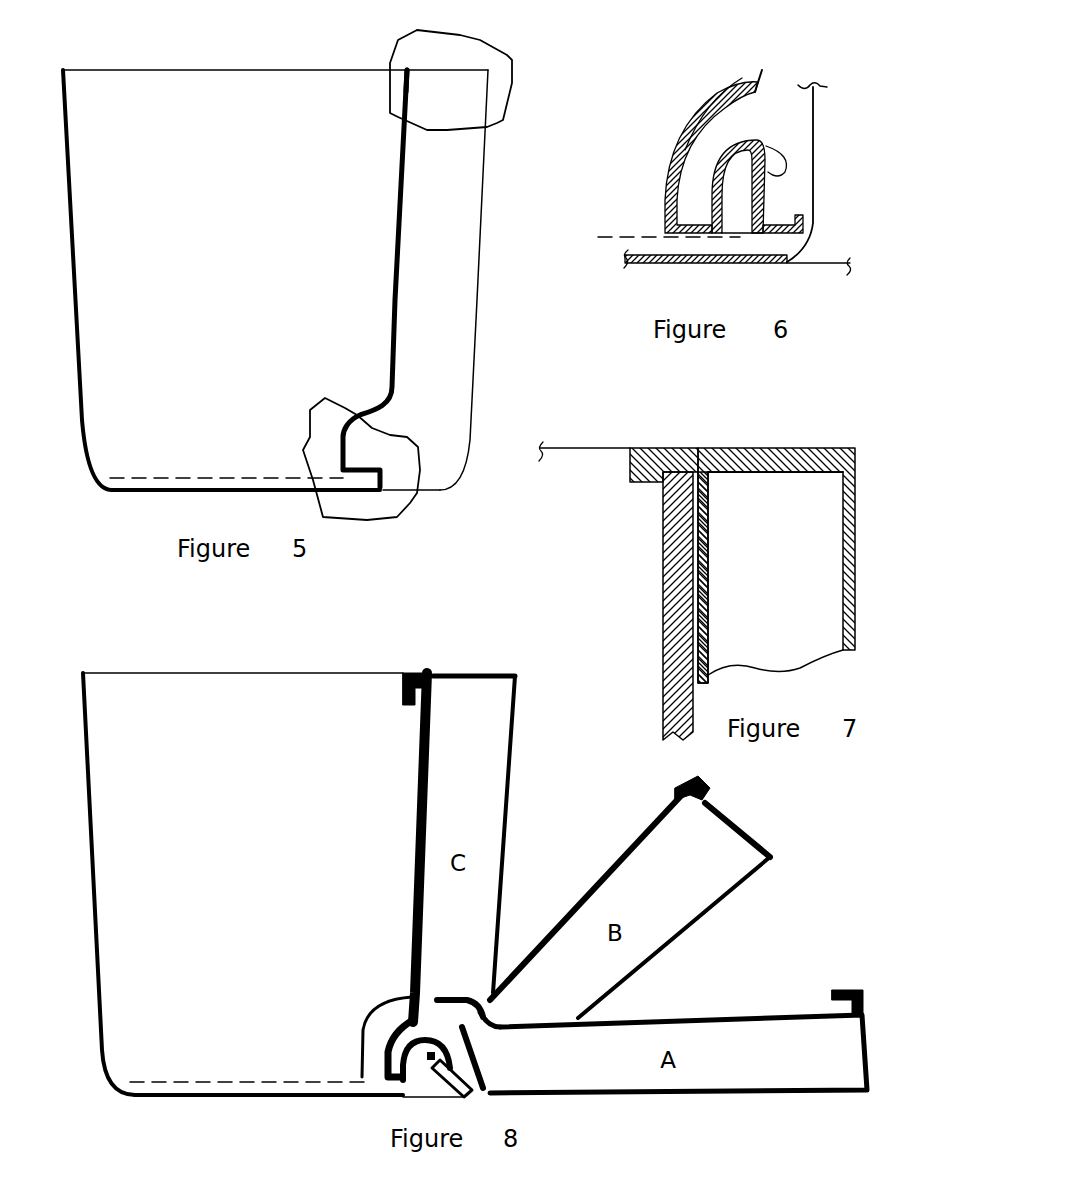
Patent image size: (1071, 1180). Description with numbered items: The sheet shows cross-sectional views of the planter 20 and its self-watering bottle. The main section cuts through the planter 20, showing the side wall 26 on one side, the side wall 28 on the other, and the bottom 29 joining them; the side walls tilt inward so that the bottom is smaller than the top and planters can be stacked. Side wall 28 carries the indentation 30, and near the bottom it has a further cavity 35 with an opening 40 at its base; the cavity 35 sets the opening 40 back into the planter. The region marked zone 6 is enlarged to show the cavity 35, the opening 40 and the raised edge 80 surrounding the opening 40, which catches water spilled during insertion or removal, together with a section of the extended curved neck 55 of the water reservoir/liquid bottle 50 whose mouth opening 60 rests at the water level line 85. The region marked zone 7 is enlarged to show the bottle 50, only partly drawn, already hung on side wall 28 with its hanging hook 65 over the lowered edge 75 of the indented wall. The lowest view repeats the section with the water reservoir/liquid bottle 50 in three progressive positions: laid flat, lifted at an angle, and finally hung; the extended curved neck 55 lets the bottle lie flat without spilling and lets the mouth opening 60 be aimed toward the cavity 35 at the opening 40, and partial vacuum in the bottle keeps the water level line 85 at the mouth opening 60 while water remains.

In FIG. 5, the zone 6 is at (403, 513).
In FIG. 5, the zone 7 is at (465, 37).
In FIG. 5, the planter 20 is at (498, 270).
In FIG. 5, the side wall 26 is at (75, 377).
In FIG. 5, the side wall 28 is at (477, 330).
In FIG. 7, the side wall 28 is at (663, 533).
In FIG. 5, the bottom 29 is at (163, 493).
In FIG. 6, the bottom 29 is at (660, 263).
In FIG. 5, the indentation 30 is at (453, 212).
In FIG. 5, the cavity 35 is at (375, 415).
In FIG. 6, the cavity 35 is at (730, 128).
In FIG. 6, the opening 40 is at (760, 235).
In FIG. 8, the opening 40 is at (377, 1083).
In FIG. 7, the water reservoir/liquid bottle 50 is at (855, 545).
In FIG. 6, the extended curved neck 55 is at (765, 193).
In FIG. 8, the extended curved neck 55 is at (470, 998).
In FIG. 6, the mouth opening 60 is at (743, 238).
In FIG. 8, the mouth opening 60 is at (427, 1000).
In FIG. 7, the hanging hook 65 is at (663, 448).
In FIG. 5, the lowered edge 75 is at (405, 85).
In FIG. 7, the lowered edge 75 is at (693, 470).
In FIG. 6, the raised edge 80 is at (803, 212).
In FIG. 5, the water level line 85 is at (128, 480).
In FIG. 6, the water level line 85 is at (632, 235).
In FIG. 8, the water level line 85 is at (188, 1083).